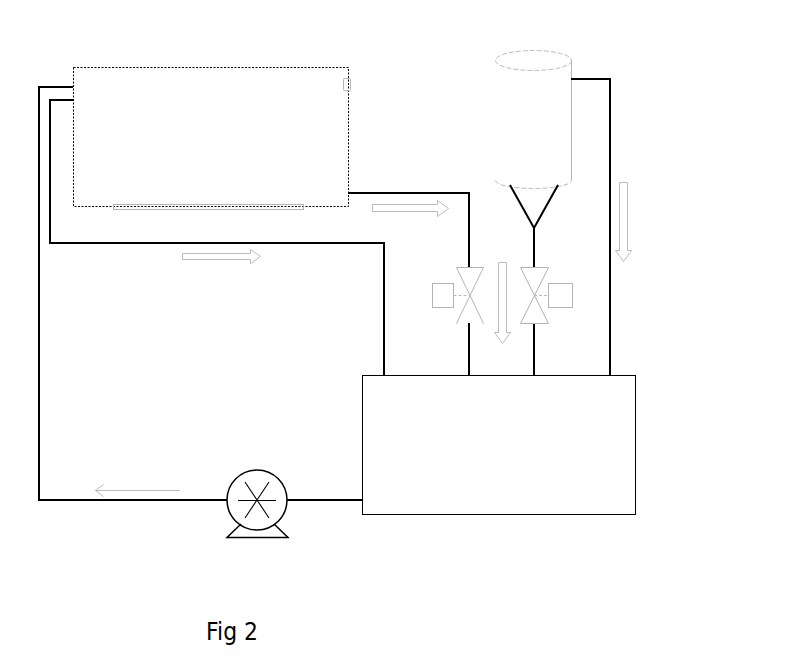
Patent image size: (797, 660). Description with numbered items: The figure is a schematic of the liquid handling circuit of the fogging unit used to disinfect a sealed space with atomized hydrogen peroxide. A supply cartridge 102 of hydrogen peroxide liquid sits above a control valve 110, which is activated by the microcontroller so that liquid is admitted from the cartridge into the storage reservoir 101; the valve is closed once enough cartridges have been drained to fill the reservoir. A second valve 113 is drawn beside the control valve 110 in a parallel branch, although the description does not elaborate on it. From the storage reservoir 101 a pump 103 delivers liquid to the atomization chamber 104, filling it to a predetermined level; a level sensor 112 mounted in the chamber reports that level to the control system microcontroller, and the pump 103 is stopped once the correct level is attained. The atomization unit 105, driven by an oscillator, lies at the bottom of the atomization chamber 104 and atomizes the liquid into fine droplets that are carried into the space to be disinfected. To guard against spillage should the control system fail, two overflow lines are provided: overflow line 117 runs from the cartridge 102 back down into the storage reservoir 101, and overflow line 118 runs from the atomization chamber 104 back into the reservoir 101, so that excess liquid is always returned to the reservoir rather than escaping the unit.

The storage reservoir 101 is at (637, 434).
The supply cartridge 102 is at (572, 63).
The pump 103 is at (245, 466).
The atomization chamber 104 is at (218, 67).
The atomization unit 105 is at (182, 214).
The control valve 110 is at (572, 290).
The level sensor 112 is at (358, 81).
The valve 113 is at (423, 298).
The overflow line 117 is at (610, 155).
The overflow line 118 is at (115, 245).